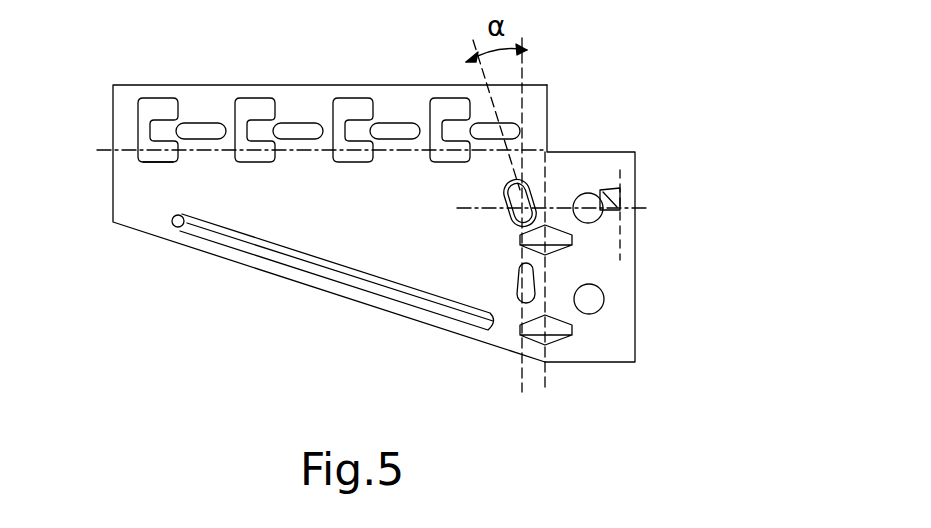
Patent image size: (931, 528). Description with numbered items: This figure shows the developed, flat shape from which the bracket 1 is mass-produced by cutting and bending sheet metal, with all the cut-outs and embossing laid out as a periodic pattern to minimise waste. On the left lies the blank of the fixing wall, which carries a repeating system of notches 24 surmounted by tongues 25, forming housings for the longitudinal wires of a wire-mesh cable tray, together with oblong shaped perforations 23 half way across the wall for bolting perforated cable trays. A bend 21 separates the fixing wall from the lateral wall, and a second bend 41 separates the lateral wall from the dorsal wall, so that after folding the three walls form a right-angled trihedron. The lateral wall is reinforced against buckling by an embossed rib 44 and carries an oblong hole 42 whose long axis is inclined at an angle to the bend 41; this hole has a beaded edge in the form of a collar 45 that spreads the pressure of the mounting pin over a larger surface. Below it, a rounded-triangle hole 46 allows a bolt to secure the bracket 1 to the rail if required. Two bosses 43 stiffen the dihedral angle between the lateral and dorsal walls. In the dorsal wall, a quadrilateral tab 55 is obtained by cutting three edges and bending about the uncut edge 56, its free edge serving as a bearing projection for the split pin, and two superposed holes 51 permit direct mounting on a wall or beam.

The bracket 1 is at (243, 277).
The bend 21 is at (210, 152).
The oblong shaped perforations 23 is at (207, 125).
The notches 24 is at (152, 103).
The tongues 25 is at (140, 160).
The bend 41 is at (545, 177).
The hole 42 is at (507, 212).
The bosses 43 is at (530, 255).
The embossed rib 44 is at (320, 270).
The collar 45 is at (503, 197).
The hole 46 is at (527, 285).
The superposed holes 51 is at (598, 218).
The tab 55 is at (612, 190).
The uncut edge 56 is at (620, 200).